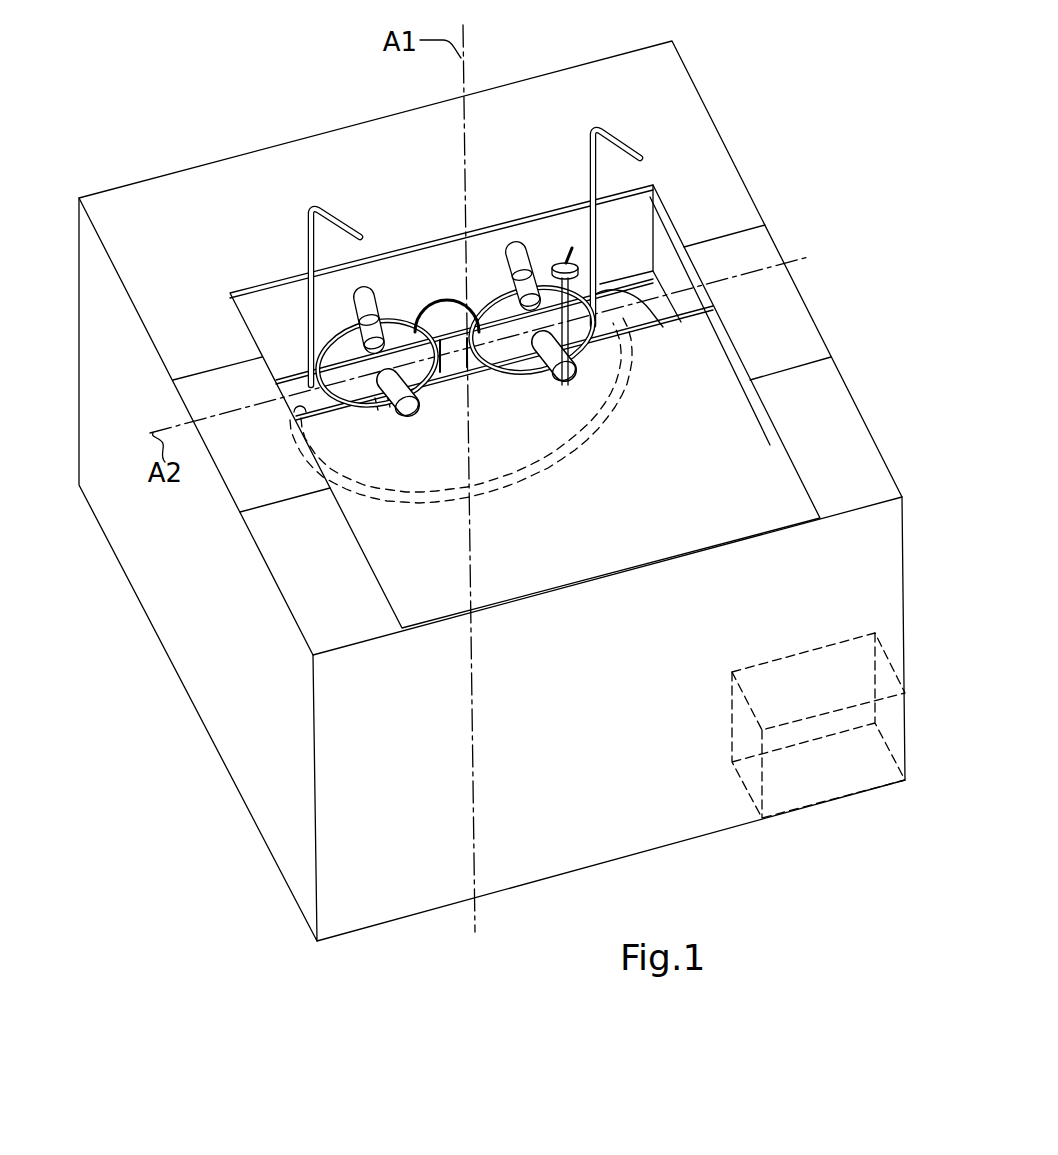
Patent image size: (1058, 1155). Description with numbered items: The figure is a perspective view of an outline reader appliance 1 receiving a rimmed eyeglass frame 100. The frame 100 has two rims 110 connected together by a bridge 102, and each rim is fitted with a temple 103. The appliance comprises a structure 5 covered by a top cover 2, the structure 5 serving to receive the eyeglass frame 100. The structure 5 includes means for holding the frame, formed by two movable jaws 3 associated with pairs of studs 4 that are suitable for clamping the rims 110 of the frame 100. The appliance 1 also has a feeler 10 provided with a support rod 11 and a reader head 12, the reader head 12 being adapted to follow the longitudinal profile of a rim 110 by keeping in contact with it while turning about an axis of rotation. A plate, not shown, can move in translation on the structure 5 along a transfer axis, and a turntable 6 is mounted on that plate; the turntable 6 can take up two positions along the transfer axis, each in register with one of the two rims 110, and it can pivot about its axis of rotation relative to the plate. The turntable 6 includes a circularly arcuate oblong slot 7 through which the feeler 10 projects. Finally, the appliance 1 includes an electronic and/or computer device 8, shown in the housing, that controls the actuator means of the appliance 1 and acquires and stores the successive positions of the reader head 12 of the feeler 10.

The outline reader appliance 1 is at (186, 128).
The top cover 2 is at (840, 408).
The movable jaws 3 is at (260, 298).
The studs 4 is at (362, 325).
The structure 5 is at (647, 333).
The turntable 6 is at (300, 404).
The circularly arcuate oblong slot 7 is at (538, 393).
The electronic and/or computer device 8 is at (862, 782).
The feeler 10 is at (590, 268).
The support rod 11 is at (606, 325).
The reader head 12 is at (568, 258).
The rimmed eyeglass frame 100 is at (434, 256).
The bridge 102 is at (415, 320).
The temple 103 is at (307, 233).
The rims 110 is at (317, 377).